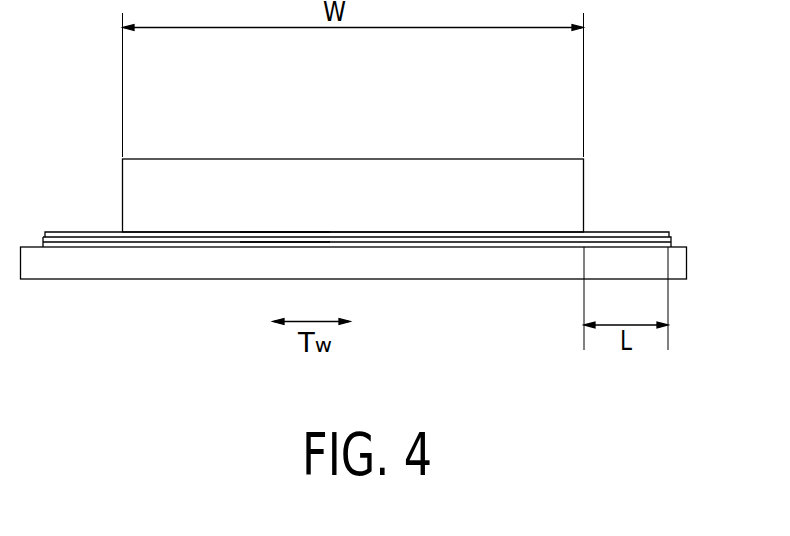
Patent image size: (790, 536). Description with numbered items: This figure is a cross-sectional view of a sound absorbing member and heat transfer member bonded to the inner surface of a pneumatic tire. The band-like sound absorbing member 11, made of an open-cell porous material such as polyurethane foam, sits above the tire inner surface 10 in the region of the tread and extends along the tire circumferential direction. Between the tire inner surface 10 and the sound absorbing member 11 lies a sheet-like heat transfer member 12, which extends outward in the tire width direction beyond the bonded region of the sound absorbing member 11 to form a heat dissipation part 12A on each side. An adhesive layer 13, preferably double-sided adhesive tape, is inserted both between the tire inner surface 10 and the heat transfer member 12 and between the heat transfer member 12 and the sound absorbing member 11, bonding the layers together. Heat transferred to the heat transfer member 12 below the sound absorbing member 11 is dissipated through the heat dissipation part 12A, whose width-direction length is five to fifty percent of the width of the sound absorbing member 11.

The tire inner surface 10 is at (676, 247).
The sound absorbing member 11 is at (468, 185).
The heat transfer member 12 is at (547, 242).
The heat dissipation part 12A is at (68, 233).
The adhesive layer 13 is at (308, 243).